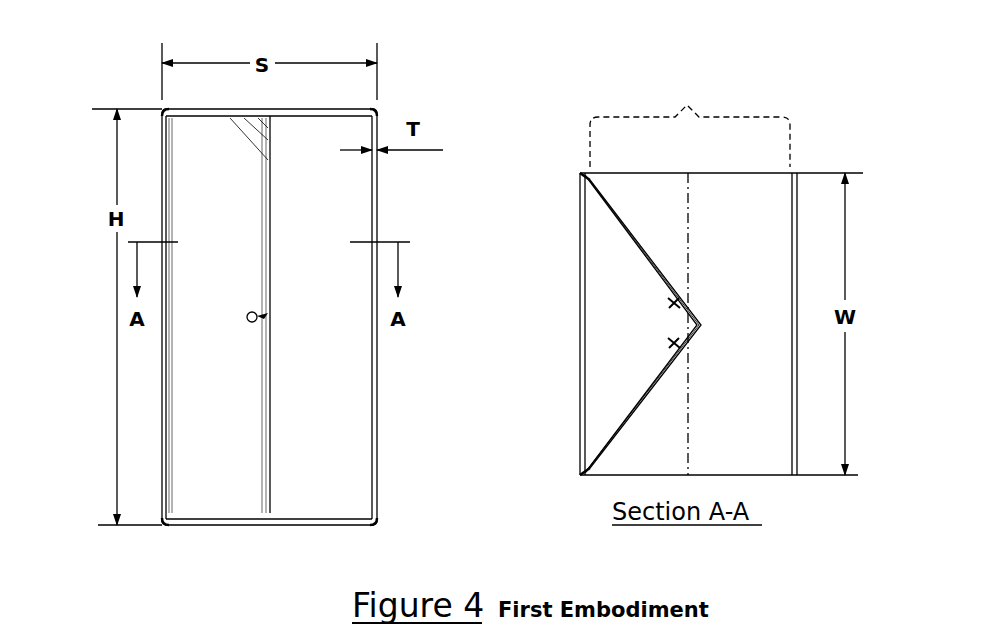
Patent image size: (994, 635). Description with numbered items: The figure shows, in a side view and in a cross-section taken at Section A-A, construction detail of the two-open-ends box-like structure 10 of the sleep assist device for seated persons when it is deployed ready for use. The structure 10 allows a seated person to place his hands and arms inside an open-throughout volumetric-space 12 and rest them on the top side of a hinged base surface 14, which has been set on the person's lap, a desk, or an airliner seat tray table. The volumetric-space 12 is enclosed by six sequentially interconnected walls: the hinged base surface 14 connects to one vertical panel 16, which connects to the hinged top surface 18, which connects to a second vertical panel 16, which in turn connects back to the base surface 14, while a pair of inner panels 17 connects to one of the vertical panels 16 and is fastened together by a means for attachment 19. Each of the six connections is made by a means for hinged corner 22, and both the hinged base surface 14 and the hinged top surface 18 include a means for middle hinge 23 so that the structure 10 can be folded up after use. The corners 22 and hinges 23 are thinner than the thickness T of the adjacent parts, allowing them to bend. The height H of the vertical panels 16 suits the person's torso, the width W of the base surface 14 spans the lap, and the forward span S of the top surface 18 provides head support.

The two-open-ends box-like structure 10 is at (538, 205).
The open-throughout volumetric-space 12 is at (687, 104).
The hinged base surface 14 is at (293, 523).
The vertical panel 16 is at (376, 452).
The inner panel 17 is at (227, 373).
The hinged top surface 18 is at (295, 113).
The means for attachment 19 is at (263, 316).
The means for hinged corner 22 is at (166, 109).
The means for middle hinge 23 is at (690, 395).